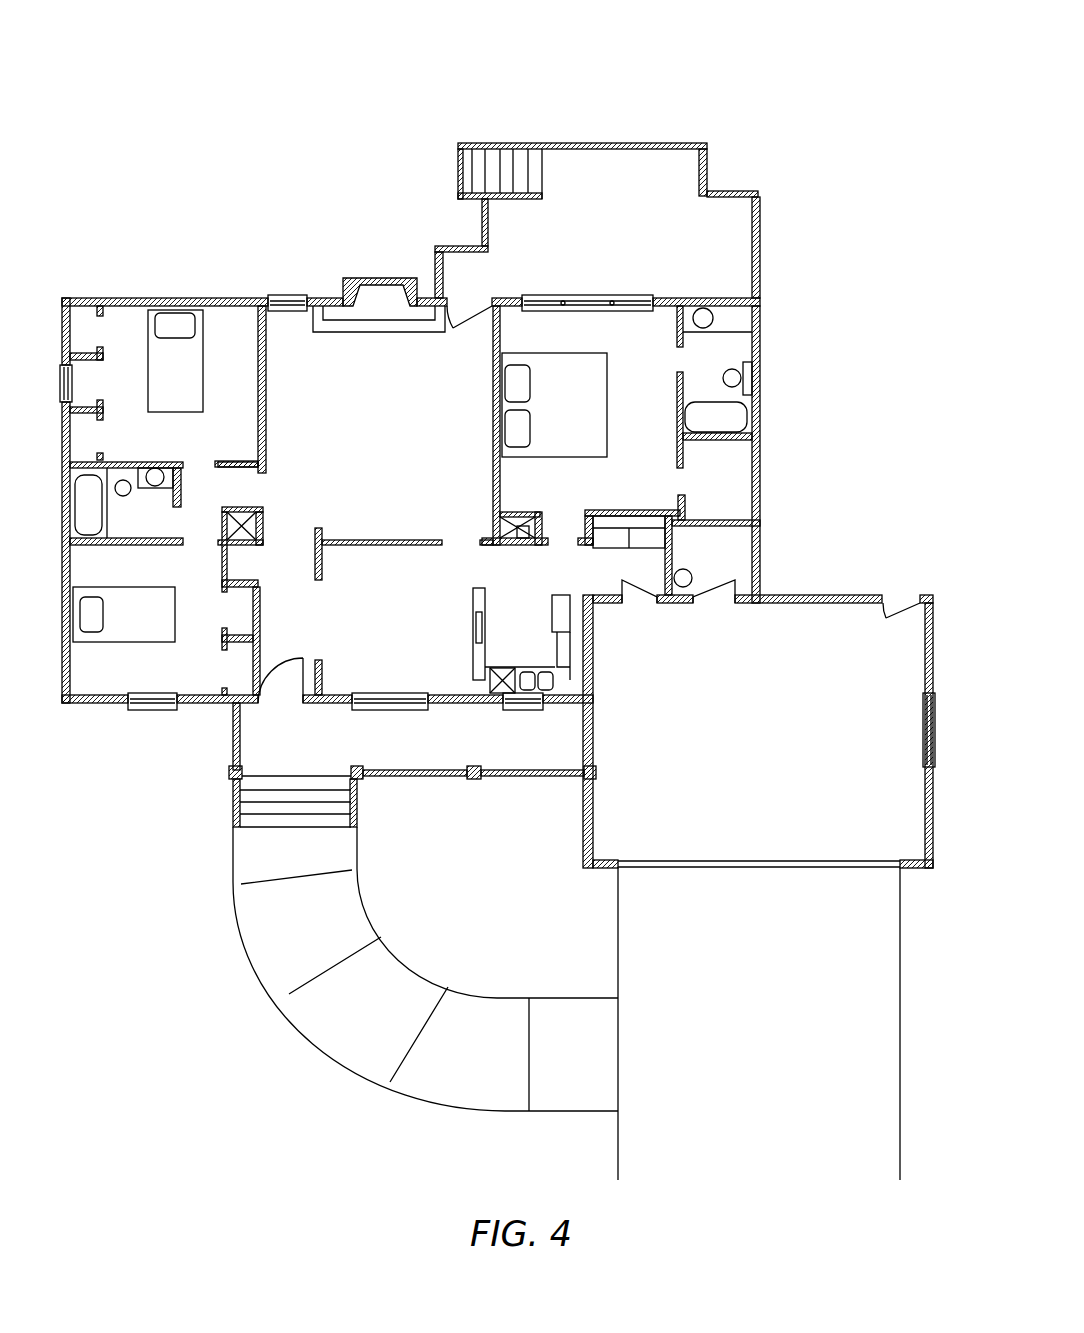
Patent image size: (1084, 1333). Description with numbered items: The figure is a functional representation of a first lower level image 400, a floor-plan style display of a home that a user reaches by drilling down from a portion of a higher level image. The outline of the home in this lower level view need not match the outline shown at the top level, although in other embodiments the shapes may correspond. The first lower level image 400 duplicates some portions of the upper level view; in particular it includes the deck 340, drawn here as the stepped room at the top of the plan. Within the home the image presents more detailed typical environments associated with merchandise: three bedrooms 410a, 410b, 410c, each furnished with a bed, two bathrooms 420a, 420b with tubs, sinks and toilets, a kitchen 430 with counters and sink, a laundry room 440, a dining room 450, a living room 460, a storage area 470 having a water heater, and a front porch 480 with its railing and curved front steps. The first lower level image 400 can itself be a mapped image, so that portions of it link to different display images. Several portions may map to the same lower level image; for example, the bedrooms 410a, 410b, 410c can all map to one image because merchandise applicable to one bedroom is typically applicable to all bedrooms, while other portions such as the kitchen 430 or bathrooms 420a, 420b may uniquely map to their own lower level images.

The first lower level image 400 is at (655, 84).
The deck 340 is at (712, 233).
The bedroom 410a is at (640, 501).
The bedroom 410b is at (190, 451).
The bedroom 410c is at (165, 687).
The bathroom 420a is at (755, 364).
The bathroom 420b is at (170, 529).
The kitchen 430 is at (545, 640).
The laundry room 440 is at (655, 581).
The dining room 450 is at (400, 631).
The living room 460 is at (400, 416).
The storage area 470 is at (740, 564).
The front porch 480 is at (515, 752).